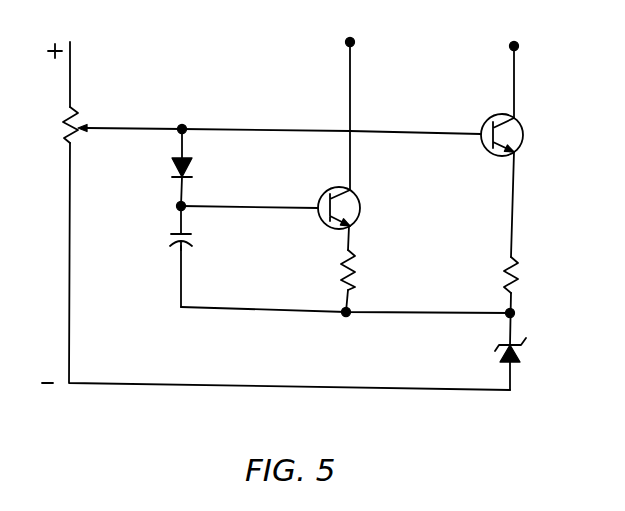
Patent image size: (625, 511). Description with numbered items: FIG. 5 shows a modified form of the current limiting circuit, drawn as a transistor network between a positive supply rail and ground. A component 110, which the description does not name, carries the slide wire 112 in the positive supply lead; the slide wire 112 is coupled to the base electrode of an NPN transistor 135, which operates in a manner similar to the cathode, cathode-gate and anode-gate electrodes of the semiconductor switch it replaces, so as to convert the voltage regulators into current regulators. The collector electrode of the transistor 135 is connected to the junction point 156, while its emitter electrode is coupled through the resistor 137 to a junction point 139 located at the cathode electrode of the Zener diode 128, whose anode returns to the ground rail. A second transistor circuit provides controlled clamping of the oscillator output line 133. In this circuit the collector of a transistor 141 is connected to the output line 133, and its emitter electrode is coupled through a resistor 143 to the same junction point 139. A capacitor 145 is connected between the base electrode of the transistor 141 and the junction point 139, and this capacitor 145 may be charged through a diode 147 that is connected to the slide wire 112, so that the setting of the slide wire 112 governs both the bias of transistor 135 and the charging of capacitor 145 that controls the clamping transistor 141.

The potentiometer 110 is at (65, 135).
The slide wire 112 is at (86, 126).
The output line 133 is at (353, 32).
The junction point 156 is at (514, 35).
The NPN transistor 135 is at (522, 128).
The transistor 141 is at (357, 197).
The resistor 143 is at (355, 269).
The diode 147 is at (193, 168).
The capacitor 145 is at (193, 240).
The resistor 137 is at (521, 273).
The junction point 139 is at (516, 313).
The Zener diode 128 is at (518, 362).